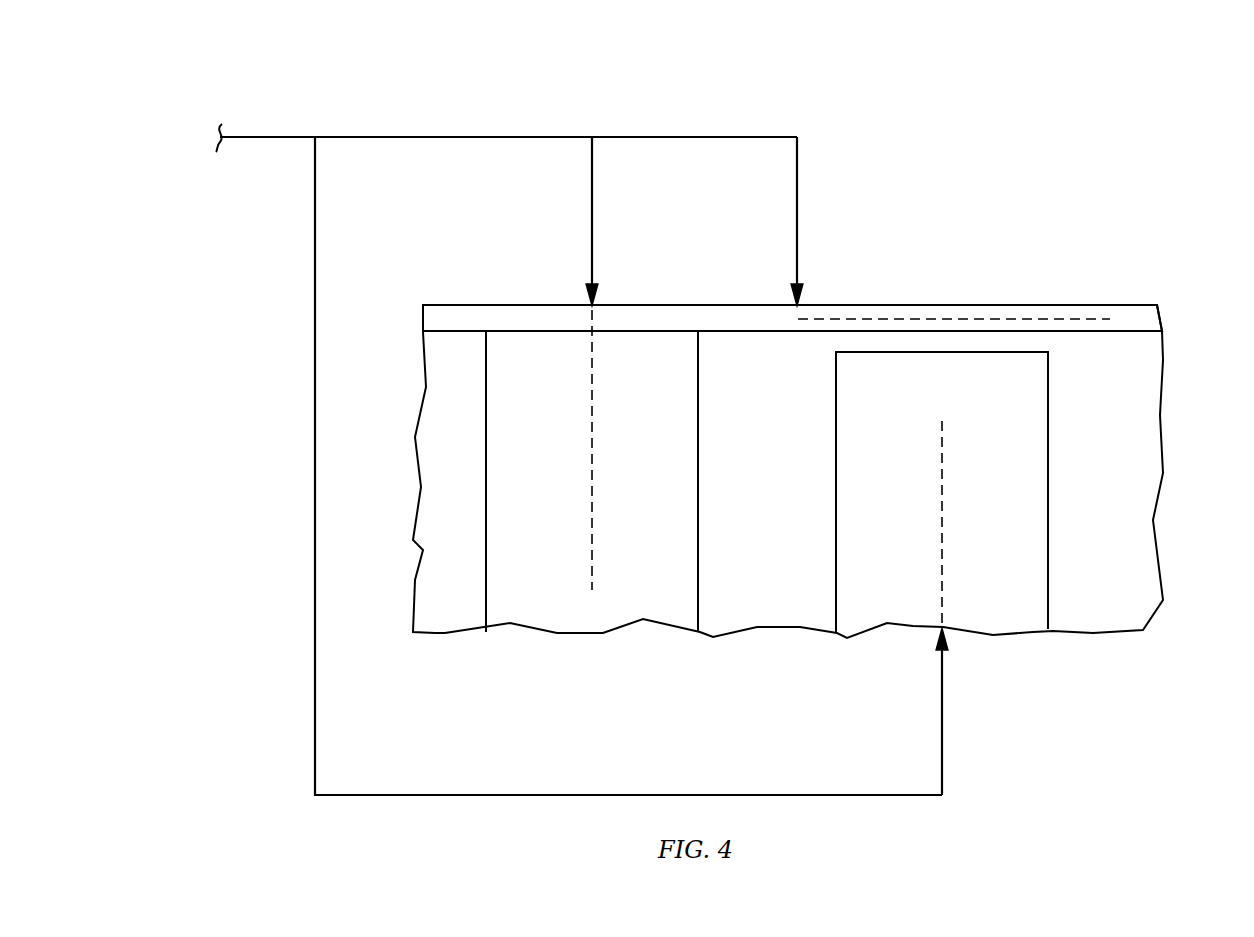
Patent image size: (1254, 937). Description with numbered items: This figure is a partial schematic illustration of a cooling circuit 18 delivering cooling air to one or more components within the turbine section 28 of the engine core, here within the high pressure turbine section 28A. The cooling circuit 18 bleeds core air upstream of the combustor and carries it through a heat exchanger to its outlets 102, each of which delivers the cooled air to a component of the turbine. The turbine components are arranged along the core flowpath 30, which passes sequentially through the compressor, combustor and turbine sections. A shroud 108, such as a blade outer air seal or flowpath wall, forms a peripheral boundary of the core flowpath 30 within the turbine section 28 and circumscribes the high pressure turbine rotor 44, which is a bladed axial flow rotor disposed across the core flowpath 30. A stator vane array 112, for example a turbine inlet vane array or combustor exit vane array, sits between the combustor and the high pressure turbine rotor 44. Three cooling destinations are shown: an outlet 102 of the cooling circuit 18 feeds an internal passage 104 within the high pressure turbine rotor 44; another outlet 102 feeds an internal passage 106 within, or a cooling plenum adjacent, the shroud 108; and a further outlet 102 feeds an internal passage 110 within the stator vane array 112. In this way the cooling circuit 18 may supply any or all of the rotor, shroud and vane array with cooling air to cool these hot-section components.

The cooling circuit 18 is at (258, 137).
The core turbine section 28 is at (1040, 232).
The high pressure turbine section 28A is at (792, 239).
The core flowpath 30 is at (1118, 469).
The high pressure turbine rotor 44 is at (1049, 610).
The outlet 102 is at (596, 304).
The internal passage 104 is at (943, 515).
The internal passage 106 is at (945, 305).
The shroud 108 is at (1102, 305).
The internal passage 110 is at (592, 505).
The stator vane array 112 is at (706, 498).